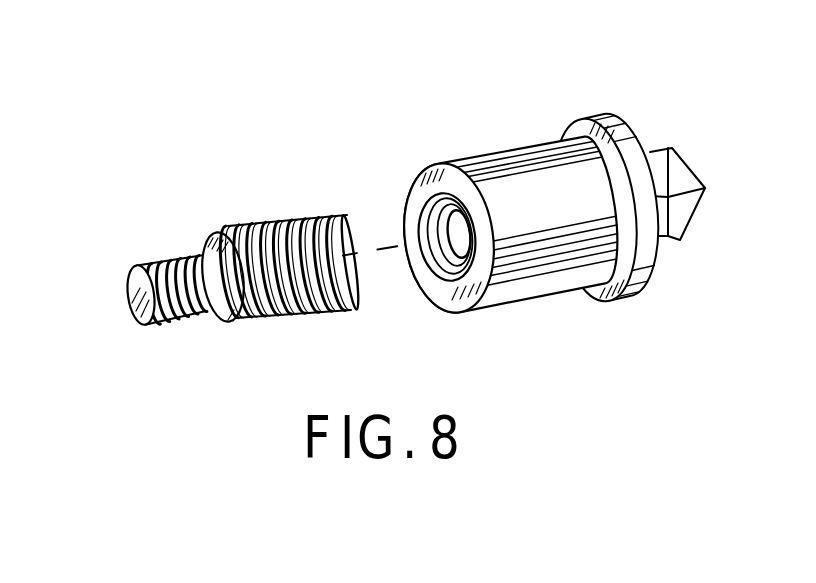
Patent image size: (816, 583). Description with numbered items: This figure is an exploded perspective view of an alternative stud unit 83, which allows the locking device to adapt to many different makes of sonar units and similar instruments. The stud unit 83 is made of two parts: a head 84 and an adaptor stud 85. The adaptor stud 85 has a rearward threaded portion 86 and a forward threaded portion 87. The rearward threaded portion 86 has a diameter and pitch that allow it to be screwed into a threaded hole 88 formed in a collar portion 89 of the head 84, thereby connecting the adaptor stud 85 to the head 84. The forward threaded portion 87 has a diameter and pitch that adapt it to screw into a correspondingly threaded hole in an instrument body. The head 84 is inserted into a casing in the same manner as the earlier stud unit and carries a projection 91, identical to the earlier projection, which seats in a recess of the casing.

The stud unit 83 is at (531, 191).
The head 84 is at (633, 298).
The adaptor stud 85 is at (205, 282).
The rearward threaded portion 86 is at (263, 223).
The forward threaded portion 87 is at (167, 260).
The threaded hole 88 is at (445, 213).
The collar portion 89 is at (512, 305).
The projection 91 is at (665, 147).